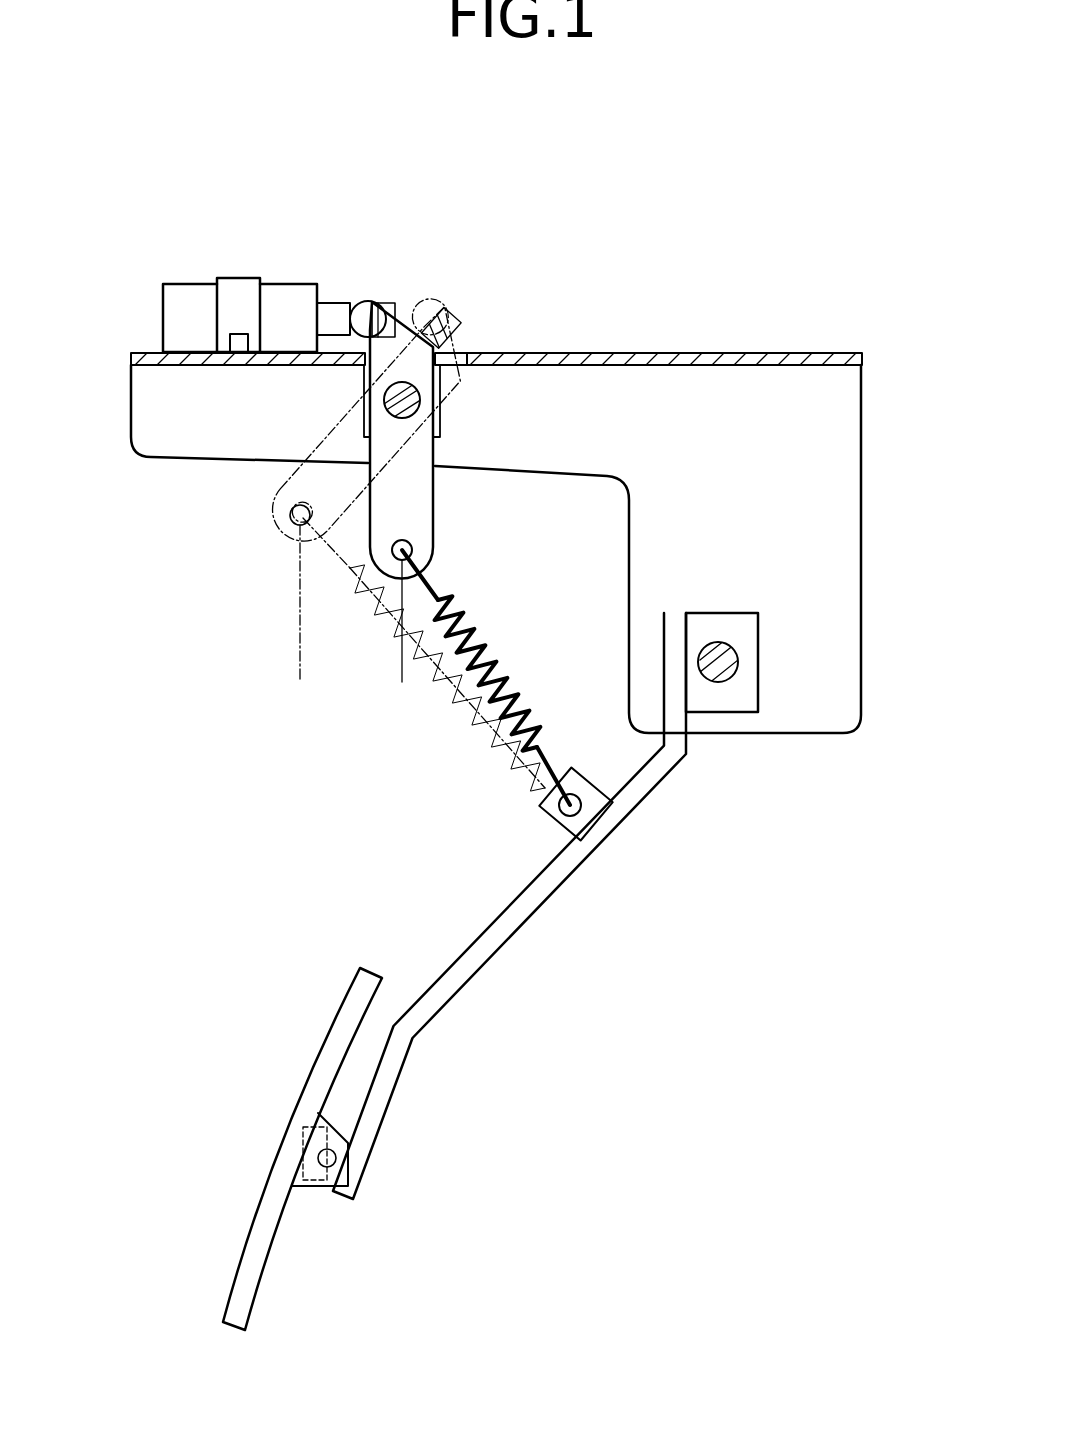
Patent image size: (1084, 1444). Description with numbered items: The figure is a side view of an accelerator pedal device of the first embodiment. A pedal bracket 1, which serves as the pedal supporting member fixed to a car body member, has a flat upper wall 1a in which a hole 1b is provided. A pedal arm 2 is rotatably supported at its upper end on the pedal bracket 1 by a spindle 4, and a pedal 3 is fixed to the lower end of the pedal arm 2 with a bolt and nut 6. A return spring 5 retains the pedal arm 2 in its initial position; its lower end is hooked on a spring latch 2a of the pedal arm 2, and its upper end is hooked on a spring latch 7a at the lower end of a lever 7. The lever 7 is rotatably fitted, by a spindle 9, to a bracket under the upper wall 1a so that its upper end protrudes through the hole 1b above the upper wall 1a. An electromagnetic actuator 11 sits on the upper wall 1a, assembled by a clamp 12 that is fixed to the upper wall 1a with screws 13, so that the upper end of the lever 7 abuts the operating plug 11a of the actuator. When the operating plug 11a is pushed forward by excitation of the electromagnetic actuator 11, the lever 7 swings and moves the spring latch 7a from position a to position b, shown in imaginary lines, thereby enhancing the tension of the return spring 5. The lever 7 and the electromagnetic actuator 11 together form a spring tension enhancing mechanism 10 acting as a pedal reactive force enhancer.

The pedal bracket 1 is at (794, 345).
The upper wall 1a is at (620, 352).
The hole 1b is at (462, 352).
The pedal arm 2 is at (480, 998).
The spring latch 2a is at (556, 818).
The pedal 3 is at (302, 1088).
The spindle 4 is at (720, 678).
The return spring 5 is at (502, 662).
The bolt and nut 6 is at (336, 1160).
The lever 7 is at (434, 522).
The spring latch 7a is at (392, 569).
The spindle 9 is at (437, 430).
The spring tension enhancing mechanism 10 is at (440, 265).
The electromagnetic actuator 11 is at (180, 285).
The operating plug 11a is at (340, 305).
The clamp 12 is at (232, 278).
The screws 13 is at (240, 333).
The position a is at (401, 643).
The position b is at (300, 616).